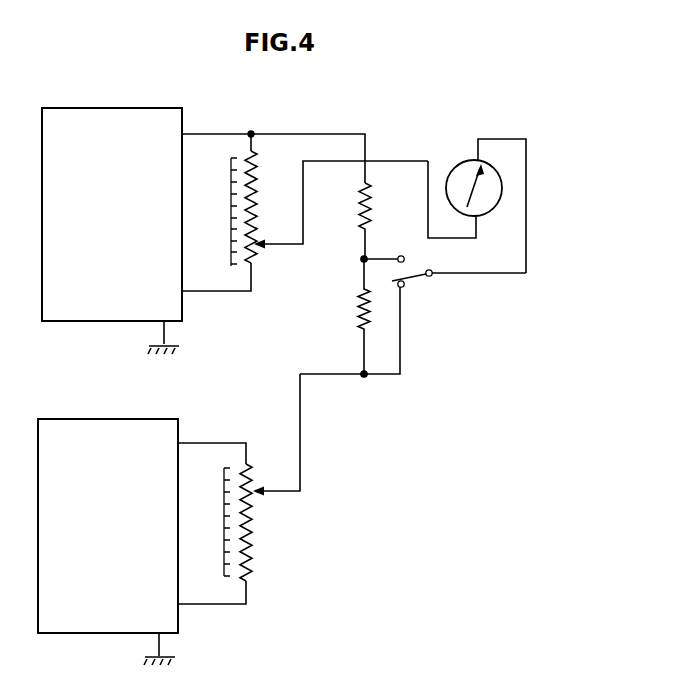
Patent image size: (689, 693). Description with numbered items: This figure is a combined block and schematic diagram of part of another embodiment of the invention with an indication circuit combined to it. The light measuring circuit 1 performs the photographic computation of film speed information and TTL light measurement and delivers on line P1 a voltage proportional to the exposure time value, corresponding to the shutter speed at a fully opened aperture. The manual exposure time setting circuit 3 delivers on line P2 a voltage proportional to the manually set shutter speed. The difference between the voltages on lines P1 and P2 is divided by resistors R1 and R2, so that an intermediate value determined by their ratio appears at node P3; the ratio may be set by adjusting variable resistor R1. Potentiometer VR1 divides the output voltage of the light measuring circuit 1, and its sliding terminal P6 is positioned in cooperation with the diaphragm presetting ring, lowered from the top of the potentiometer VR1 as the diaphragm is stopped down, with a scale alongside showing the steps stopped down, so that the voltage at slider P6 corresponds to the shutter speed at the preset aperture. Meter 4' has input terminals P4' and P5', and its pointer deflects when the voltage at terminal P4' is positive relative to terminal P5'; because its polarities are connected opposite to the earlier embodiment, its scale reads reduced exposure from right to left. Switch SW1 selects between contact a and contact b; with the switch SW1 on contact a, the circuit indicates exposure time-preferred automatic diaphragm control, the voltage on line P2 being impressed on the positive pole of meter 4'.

The light measuring circuit 1 is at (133, 107).
The manual exposure time setting circuit 3 is at (112, 418).
The meter 4' is at (470, 163).
The line P1 is at (290, 133).
The line P2 is at (272, 490).
The node P3 is at (366, 257).
The input terminal P4' is at (529, 183).
The input terminal P5' is at (471, 213).
The sliding terminal P6 is at (283, 243).
The resistor R1 is at (358, 197).
The resistor R2 is at (357, 300).
The potentiometer VR1 is at (255, 250).
The switch SW1 is at (415, 277).
The contact a is at (403, 286).
The contact b is at (402, 255).